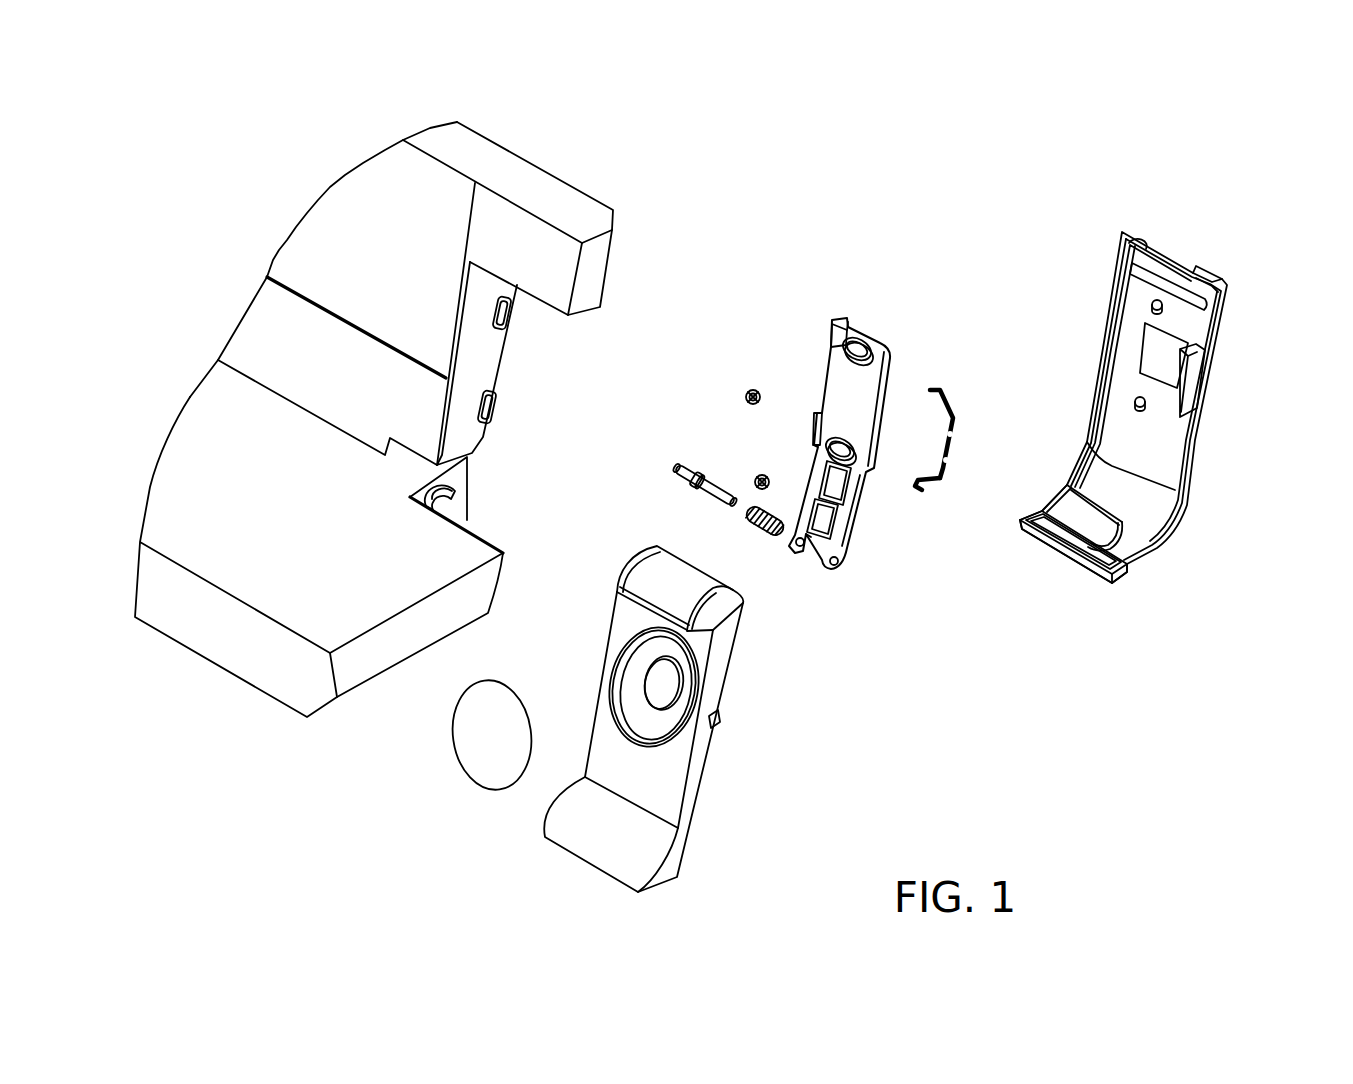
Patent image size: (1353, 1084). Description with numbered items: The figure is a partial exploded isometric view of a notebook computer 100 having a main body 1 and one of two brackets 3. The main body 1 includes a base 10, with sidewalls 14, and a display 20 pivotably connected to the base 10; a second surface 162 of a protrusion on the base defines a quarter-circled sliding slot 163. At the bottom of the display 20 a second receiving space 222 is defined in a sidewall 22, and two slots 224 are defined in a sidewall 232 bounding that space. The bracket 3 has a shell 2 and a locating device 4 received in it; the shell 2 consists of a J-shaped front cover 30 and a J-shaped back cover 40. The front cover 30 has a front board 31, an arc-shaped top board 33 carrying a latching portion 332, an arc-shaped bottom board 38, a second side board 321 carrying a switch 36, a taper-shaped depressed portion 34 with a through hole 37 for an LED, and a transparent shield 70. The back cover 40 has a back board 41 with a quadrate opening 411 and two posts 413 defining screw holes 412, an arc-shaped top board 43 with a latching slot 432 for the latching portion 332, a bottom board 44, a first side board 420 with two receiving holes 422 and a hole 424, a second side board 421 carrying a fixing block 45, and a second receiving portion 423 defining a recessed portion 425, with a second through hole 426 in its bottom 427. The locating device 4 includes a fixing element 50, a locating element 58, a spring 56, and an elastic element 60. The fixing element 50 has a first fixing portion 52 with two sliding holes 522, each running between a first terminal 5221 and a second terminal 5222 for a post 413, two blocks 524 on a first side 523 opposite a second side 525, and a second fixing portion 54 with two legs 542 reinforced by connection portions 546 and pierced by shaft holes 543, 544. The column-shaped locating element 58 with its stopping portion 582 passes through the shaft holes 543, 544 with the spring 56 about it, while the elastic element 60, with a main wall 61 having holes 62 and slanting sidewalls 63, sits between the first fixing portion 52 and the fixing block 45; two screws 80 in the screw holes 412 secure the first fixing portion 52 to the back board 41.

The main body 1 is at (198, 238).
The shell 2 is at (1050, 653).
The bracket 3 is at (1237, 620).
The locating device 4 is at (710, 323).
The base 10 is at (233, 422).
The sidewall 14 is at (418, 628).
The second surface 162 is at (460, 483).
The sliding slot 163 is at (452, 500).
The display 20 is at (318, 277).
The sidewall 22 is at (595, 268).
The second receiving space 222 is at (537, 417).
The slot 224 is at (510, 317).
The sidewall 232 is at (487, 355).
The front cover 30 is at (755, 656).
The front board 31 is at (670, 772).
The second side board 321 is at (720, 685).
The top board 33 is at (710, 612).
The latching portion 332 is at (660, 585).
The depressed portion 34 is at (630, 680).
The switch 36 is at (717, 720).
The through hole 37 is at (657, 673).
The bottom board 38 is at (605, 840).
The back cover 40 is at (1060, 586).
The back board 41 is at (1170, 437).
The opening 411 is at (1158, 345).
The screw hole 412 is at (1135, 403).
The post 413 is at (1168, 257).
The first side board 420 is at (1123, 343).
The second side board 421 is at (1220, 305).
The receiving hole 422 is at (1117, 382).
The second receiving portion 423 is at (1122, 504).
The hole 424 is at (1083, 492).
The recessed portion 425 is at (1092, 528).
The second through hole 426 is at (1120, 533).
The bottom 427 is at (1117, 563).
The top board 43 is at (1212, 277).
The latching slot 432 is at (1155, 300).
The bottom board 44 is at (1105, 574).
The fixing block 45 is at (1193, 370).
The fixing element 50 is at (808, 292).
The first fixing portion 52 is at (850, 388).
The sliding hole 522 is at (860, 340).
The first terminal 5221 is at (880, 357).
The second terminal 5222 is at (842, 322).
The first side 523 is at (835, 383).
The block 524 is at (833, 337).
The second side 525 is at (887, 382).
The second fixing portion 54 is at (827, 447).
The leg 542 is at (855, 507).
The shaft hole 543 is at (802, 551).
The shaft hole 544 is at (842, 560).
The connection portion 546 is at (817, 540).
The spring 56 is at (748, 522).
The locating element 58 is at (702, 455).
The stopping portion 582 is at (673, 490).
The elastic element 60 is at (958, 403).
The main wall 61 is at (945, 450).
The hole 62 is at (953, 433).
The sidewall 63 is at (930, 485).
The transparent shield 70 is at (488, 738).
The screw 80 is at (748, 388).
The notebook computer 100 is at (802, 190).